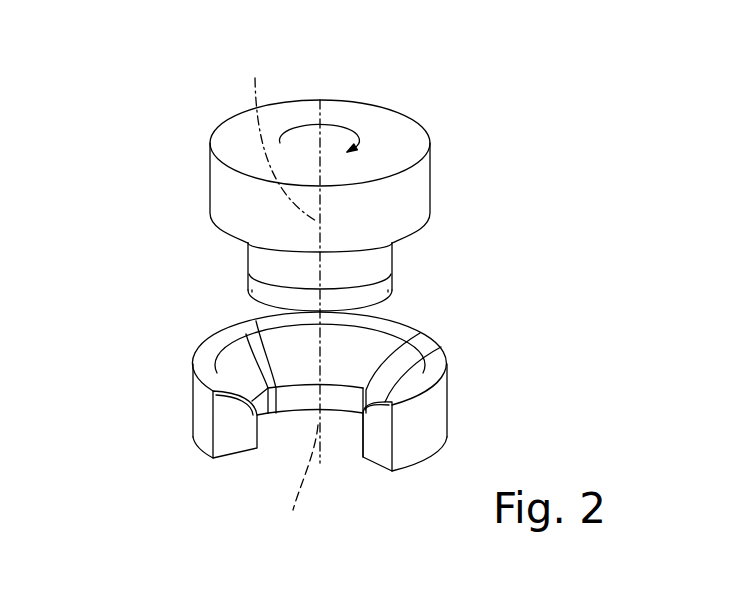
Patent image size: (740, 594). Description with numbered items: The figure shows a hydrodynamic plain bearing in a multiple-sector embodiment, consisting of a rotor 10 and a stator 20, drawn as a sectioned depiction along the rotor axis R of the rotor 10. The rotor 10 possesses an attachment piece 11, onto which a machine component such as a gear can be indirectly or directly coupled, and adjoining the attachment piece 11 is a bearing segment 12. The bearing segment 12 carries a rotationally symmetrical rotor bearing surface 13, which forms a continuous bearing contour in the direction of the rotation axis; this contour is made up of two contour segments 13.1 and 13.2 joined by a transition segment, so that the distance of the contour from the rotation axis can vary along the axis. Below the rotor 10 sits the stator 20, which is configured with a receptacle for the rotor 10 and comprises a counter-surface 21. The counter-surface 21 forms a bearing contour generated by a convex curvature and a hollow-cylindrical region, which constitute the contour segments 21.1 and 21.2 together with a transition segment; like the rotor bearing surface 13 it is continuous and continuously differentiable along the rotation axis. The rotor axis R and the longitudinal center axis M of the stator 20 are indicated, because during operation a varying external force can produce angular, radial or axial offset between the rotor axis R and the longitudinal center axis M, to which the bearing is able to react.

The rotor 10 is at (196, 122).
The attachment piece 11 is at (390, 203).
The bearing segment 12 is at (388, 255).
The rotor bearing surface 13 is at (249, 260).
The contour segment 13.1 is at (385, 268).
The contour segment 13.2 is at (380, 296).
The stator 20 is at (171, 382).
The counter-surface 21 is at (288, 335).
The contour segment 21.1 is at (353, 362).
The contour segment 21.2 is at (352, 407).
The rotor axis R is at (283, 137).
The longitudinal center axis M is at (301, 321).